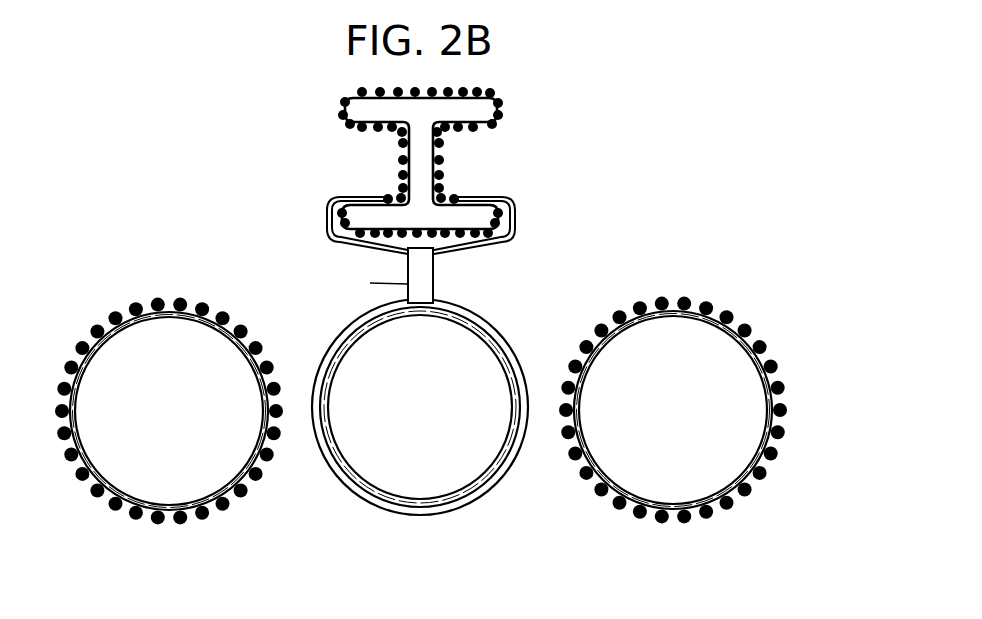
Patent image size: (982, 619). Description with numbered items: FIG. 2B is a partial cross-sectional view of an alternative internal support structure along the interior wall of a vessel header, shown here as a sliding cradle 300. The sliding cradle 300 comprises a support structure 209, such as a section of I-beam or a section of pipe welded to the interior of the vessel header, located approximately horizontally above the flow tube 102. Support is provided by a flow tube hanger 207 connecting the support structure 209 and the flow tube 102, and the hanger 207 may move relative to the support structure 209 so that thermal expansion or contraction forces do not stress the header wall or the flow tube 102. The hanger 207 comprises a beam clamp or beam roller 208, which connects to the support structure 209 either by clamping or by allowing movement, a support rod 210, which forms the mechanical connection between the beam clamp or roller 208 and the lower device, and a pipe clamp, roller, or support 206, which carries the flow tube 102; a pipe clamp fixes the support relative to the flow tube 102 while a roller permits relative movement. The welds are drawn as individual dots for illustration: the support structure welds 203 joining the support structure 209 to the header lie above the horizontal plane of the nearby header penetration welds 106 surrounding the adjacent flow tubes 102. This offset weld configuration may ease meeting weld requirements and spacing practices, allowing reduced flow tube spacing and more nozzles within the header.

The flow tube 102 is at (382, 503).
The header penetration welds 106 is at (198, 521).
The support structure welds 203 is at (375, 127).
The pipe clamp, roller, or support 206 is at (494, 325).
The flow tube hanger 207 is at (370, 283).
The beam clamp or beam roller 208 is at (517, 215).
The support structure 209 is at (497, 97).
The support rod 210 is at (433, 262).
The sliding cradle 300 is at (598, 149).